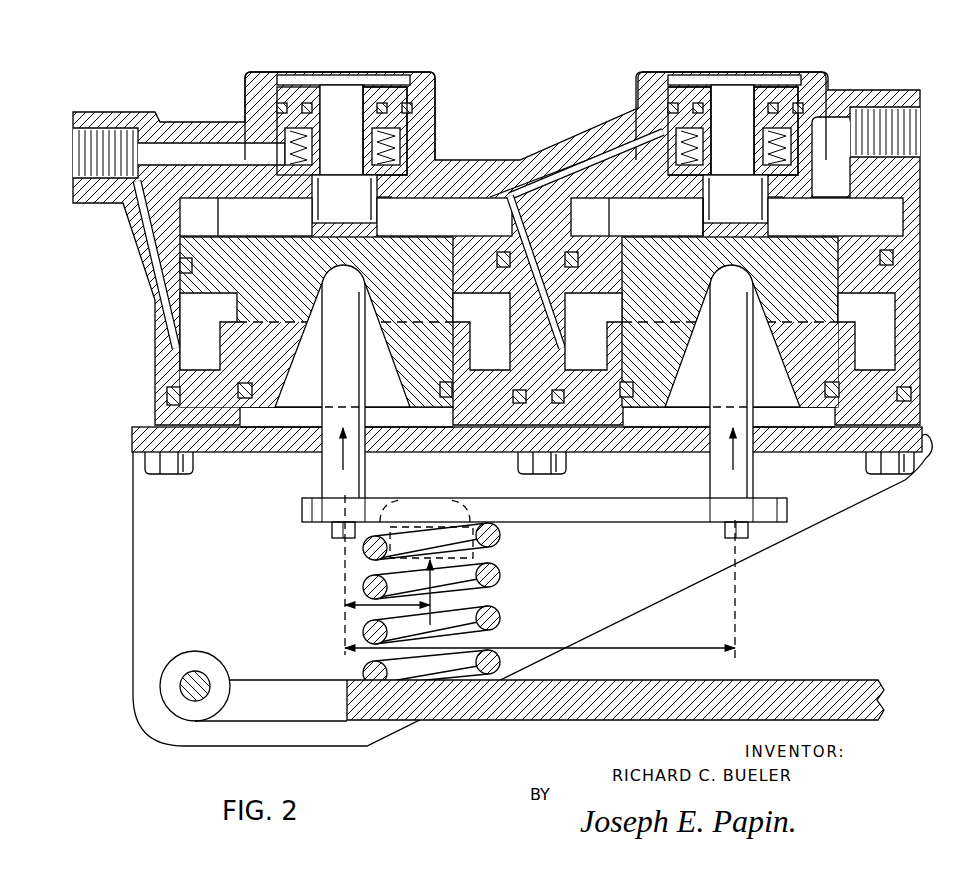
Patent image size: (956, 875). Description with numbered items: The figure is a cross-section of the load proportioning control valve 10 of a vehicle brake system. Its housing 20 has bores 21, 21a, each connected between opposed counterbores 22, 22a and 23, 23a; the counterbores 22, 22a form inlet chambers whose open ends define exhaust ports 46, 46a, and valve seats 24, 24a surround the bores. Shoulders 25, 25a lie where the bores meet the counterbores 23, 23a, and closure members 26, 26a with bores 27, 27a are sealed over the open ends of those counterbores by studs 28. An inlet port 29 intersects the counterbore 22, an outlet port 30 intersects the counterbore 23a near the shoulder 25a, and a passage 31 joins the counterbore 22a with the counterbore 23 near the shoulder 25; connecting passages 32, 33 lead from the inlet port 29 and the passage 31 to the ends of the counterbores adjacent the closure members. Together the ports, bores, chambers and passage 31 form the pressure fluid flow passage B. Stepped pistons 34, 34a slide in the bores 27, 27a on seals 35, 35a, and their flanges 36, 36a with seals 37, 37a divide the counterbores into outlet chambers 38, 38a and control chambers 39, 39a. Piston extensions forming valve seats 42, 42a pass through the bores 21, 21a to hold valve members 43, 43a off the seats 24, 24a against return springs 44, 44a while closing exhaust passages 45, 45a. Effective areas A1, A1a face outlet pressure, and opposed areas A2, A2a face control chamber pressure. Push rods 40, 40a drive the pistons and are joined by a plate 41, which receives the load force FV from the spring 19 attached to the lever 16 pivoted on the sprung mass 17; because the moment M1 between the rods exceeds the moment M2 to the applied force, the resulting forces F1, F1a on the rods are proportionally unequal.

The control valve 10 is at (152, 88).
The force applying lever 16 is at (780, 685).
The vehicle sprung mass 17 is at (133, 640).
The spring 19 is at (500, 622).
The housing 20 is at (166, 121).
The bore 21 is at (380, 200).
The counterbore 22 is at (400, 158).
The counterbore 23 is at (503, 360).
The valve seat 24 is at (292, 176).
The shoulder 25 is at (203, 206).
The closure member 26 is at (155, 413).
The closure member bore 27 is at (250, 428).
The stud 28 is at (143, 462).
The inlet port 29 is at (67, 185).
The outlet port 30 is at (878, 112).
The passage 31 is at (598, 143).
The connecting passage 32 is at (152, 262).
The connecting passage 33 is at (481, 331).
The stepped piston 34 is at (419, 307).
The peripheral seal 35 is at (247, 383).
The radially extending flange 36 is at (316, 322).
The peripheral seal 37 is at (497, 262).
The outlet chamber 38 is at (482, 224).
The control chamber 39 is at (235, 308).
The push rod 40 is at (320, 462).
The force receiving plate 41 is at (553, 522).
The piston valve seat 42 is at (344, 199).
The valve member 43 is at (318, 88).
The return spring 44 is at (402, 140).
The exhaust passage 45 is at (360, 97).
The exhaust port 46 is at (288, 78).
The effective area A1 is at (278, 224).
The effective area A2 is at (218, 293).
The pressure fluid flow passage B is at (564, 140).
The resulting force F1 is at (347, 453).
The load force FV is at (440, 592).
The moment M1 is at (352, 607).
The moment M2 is at (352, 650).
The bore 21a is at (778, 200).
The counterbore 22a is at (792, 150).
The counterbore 23a is at (893, 352).
The valve seat 24a is at (790, 180).
The shoulder 25a is at (700, 201).
The closure member 26a is at (926, 462).
The closure member bore 27a is at (628, 423).
The stepped piston 34a is at (835, 352).
The peripheral seal 35a is at (630, 383).
The radially extending flange 36a is at (858, 300).
The peripheral seal 37a is at (880, 262).
The outlet chamber 38a is at (885, 227).
The control chamber 39a is at (622, 310).
The push rod 40a is at (758, 462).
The piston valve seat 42a is at (735, 199).
The valve member 43a is at (708, 85).
The return spring 44a is at (680, 152).
The exhaust passage 45a is at (750, 95).
The exhaust port 46a is at (676, 78).
The effective area A1a is at (606, 238).
The effective area A2a is at (600, 293).
The resulting force F1a is at (731, 462).